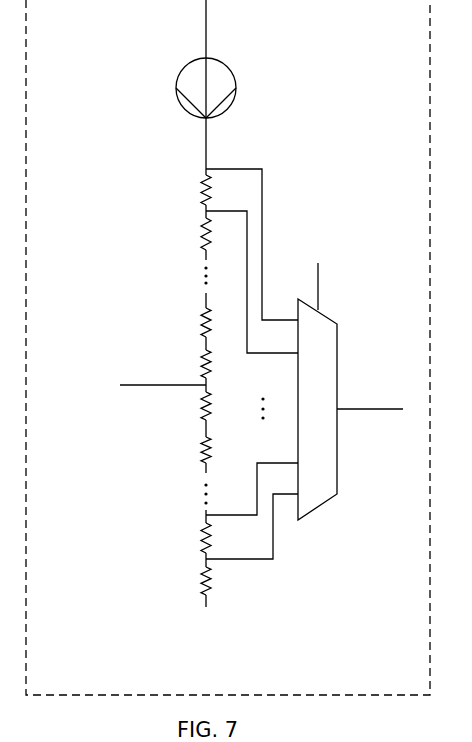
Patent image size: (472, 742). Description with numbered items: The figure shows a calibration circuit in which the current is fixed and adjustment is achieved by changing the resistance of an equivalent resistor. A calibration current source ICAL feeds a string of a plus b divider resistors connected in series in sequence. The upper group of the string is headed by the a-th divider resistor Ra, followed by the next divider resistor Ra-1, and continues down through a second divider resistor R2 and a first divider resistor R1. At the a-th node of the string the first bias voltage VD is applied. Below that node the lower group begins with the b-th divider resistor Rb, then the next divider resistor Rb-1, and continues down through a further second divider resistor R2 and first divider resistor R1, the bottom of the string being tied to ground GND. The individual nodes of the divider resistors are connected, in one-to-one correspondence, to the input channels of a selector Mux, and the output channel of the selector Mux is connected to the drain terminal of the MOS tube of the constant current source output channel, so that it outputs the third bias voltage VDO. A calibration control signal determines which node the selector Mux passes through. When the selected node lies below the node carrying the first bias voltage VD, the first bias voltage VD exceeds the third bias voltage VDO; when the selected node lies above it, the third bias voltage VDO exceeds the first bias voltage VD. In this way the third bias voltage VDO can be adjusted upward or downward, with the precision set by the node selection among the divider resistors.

The calibration current source ICAL is at (218, 67).
The a-th divider resistor Ra is at (231, 244).
The (a-1)-th divider resistor Ra-1 is at (229, 282).
The second divider resistor R2 is at (230, 430).
The first divider resistor R1 is at (231, 474).
The b-th divider resistor Rb is at (187, 406).
The (b-1)-th divider resistor Rb-1 is at (185, 449).
The first bias voltage VD is at (151, 385).
The selector Mux is at (328, 365).
The third bias voltage VDO is at (371, 398).
The ground GND is at (201, 628).